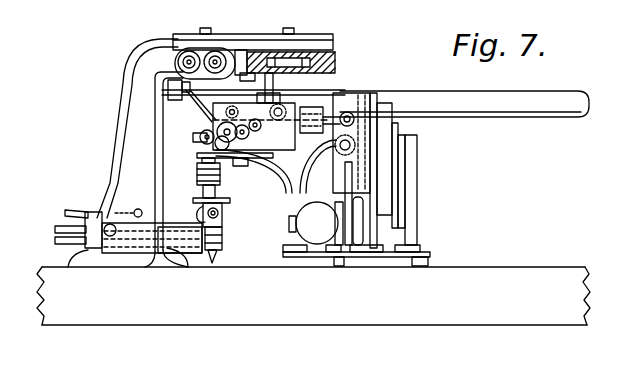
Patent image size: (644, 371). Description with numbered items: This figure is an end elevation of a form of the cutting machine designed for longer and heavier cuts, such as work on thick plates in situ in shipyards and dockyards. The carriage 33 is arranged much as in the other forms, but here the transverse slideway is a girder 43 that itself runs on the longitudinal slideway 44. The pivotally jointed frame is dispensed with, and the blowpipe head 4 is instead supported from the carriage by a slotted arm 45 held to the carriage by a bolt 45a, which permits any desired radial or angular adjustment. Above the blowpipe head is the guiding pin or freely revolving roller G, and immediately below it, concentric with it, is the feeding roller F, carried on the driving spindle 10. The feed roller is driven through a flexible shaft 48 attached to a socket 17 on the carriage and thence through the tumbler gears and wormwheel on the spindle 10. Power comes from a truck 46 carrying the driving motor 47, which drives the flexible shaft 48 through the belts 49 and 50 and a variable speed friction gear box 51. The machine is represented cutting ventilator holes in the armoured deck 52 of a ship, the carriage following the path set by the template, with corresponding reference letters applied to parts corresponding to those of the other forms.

The blowpipe head 4 is at (222, 247).
The driving spindle 10 is at (213, 113).
The socket 17 is at (213, 148).
The carriage 33 is at (288, 108).
The girder 43 is at (425, 112).
The longitudinal slideway 44 is at (197, 82).
The slotted arm 45 is at (263, 156).
The bolt 45a is at (237, 166).
The truck 46 is at (370, 257).
The driving motor 47 is at (308, 226).
The flexible shaft 48 is at (315, 155).
The belt 49 is at (355, 242).
The belt 50 is at (382, 185).
The variable speed friction gear box 51 is at (355, 155).
The armoured deck 52 is at (509, 303).
The guiding pin or freely revolving roller G is at (335, 43).
The feeding roller F is at (335, 62).